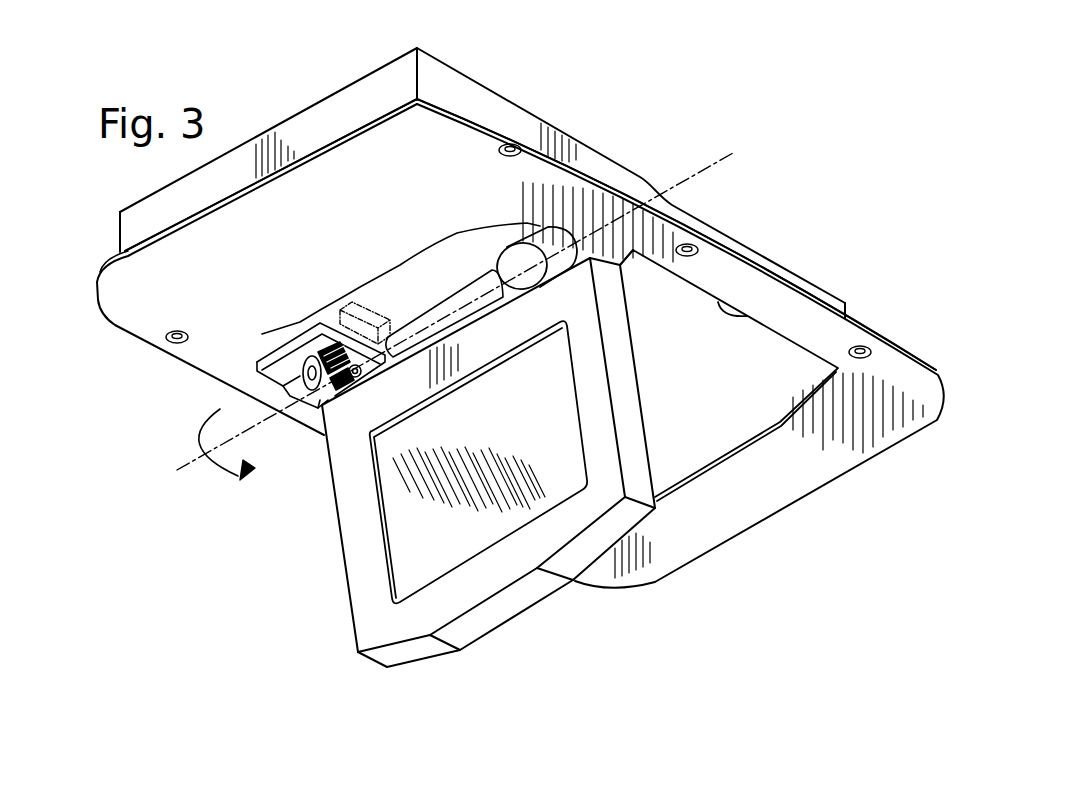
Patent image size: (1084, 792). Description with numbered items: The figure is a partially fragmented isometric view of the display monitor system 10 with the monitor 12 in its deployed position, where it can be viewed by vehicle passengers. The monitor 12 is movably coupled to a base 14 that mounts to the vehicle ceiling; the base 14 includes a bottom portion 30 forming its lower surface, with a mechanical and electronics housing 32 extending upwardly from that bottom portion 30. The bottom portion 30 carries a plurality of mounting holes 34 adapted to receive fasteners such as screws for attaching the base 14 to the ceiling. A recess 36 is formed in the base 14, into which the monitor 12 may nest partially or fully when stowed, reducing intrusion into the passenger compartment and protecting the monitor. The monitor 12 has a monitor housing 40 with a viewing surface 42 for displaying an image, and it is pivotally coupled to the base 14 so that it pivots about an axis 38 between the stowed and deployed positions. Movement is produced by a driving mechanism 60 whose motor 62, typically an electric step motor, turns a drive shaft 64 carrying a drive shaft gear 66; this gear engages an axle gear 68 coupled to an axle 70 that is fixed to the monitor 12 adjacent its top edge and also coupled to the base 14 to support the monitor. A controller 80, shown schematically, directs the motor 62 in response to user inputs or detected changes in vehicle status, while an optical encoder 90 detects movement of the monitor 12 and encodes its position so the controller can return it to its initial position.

The display monitor system 10 is at (805, 136).
The monitor 12 is at (458, 445).
The base 14 is at (443, 59).
The bottom portion 30 is at (521, 343).
The mechanical and electronics housing 32 is at (567, 130).
The mounting holes 34 is at (872, 352).
The recess 36 is at (745, 313).
The axis 38 is at (703, 172).
The monitor housing 40 is at (458, 445).
The viewing surface 42 is at (505, 413).
The driving mechanism 60 is at (282, 377).
The motor 62 is at (313, 400).
The drive shaft 64 is at (315, 360).
The drive shaft gear 66 is at (313, 355).
The axle gear 68 is at (350, 388).
The axle 70 is at (361, 368).
The controller 80 is at (362, 322).
The encoder 90 is at (500, 270).